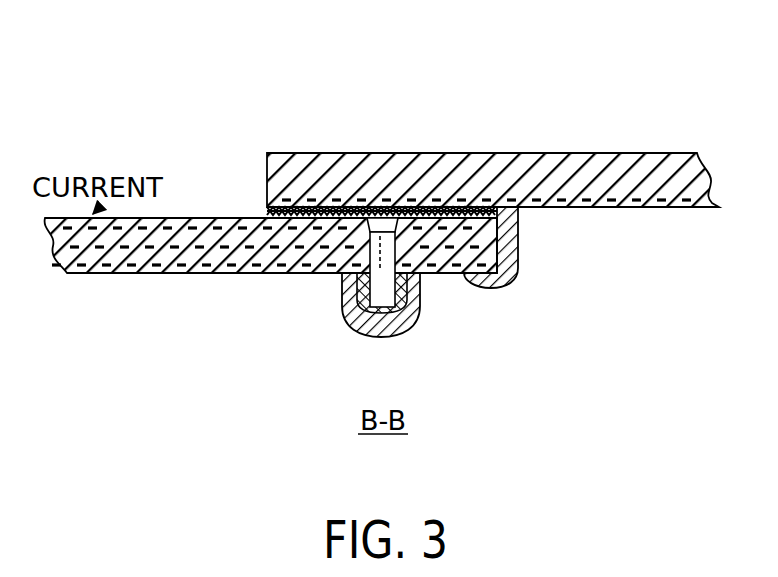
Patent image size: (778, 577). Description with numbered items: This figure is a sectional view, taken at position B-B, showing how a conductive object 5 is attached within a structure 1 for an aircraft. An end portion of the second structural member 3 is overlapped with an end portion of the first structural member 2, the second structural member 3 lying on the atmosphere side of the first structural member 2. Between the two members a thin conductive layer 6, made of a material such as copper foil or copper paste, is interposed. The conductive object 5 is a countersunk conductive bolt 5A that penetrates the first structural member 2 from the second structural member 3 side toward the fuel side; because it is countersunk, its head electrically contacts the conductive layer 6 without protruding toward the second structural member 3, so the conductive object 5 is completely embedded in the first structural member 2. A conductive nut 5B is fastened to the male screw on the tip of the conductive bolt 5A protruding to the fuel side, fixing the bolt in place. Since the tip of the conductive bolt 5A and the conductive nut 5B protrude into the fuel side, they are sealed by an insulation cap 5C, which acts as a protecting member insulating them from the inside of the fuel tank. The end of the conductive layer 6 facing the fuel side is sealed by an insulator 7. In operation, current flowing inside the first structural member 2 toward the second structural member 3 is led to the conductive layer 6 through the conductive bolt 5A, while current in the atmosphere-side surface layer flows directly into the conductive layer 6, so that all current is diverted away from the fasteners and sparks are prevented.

The structure for an aircraft 1 is at (696, 88).
The first structural member 2 is at (181, 218).
The second structural member 3 is at (583, 153).
The conductive object 5 is at (371, 218).
The conductive bolt 5A is at (383, 282).
The conductive nut 5B is at (410, 323).
The insulation cap 5C is at (342, 302).
The conductive layer 6 is at (267, 215).
The insulator 7 is at (518, 255).